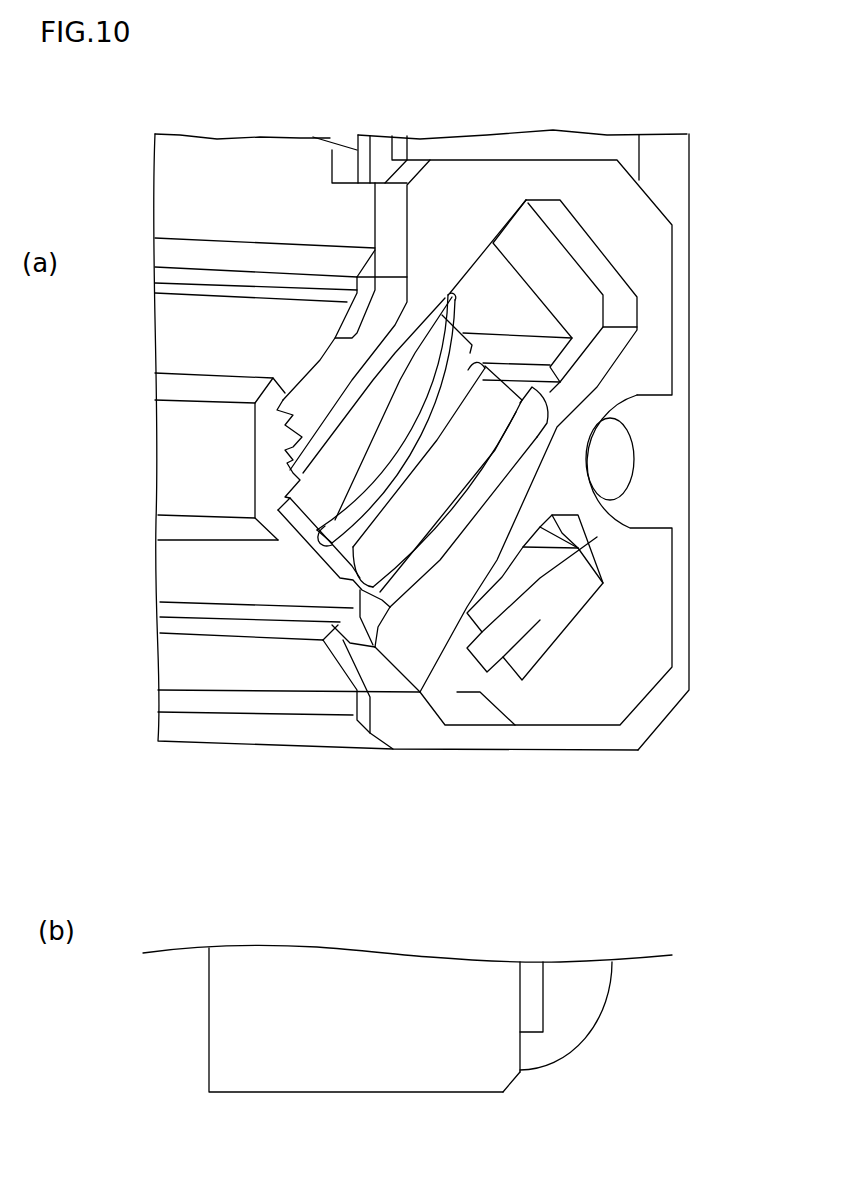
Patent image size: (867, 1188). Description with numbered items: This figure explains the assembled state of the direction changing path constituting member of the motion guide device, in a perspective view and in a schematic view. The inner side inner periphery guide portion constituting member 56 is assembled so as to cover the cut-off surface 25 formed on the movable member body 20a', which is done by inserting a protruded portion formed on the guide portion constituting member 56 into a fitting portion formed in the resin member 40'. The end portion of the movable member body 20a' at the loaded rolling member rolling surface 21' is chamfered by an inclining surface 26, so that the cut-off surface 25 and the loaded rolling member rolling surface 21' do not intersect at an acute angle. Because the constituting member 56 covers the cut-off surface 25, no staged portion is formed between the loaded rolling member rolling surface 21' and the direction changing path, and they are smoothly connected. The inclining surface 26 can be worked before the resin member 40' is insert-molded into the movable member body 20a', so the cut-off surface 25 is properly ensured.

The resin member 40' is at (579, 551).
The inner side inner periphery guide portion constituting member 56 is at (652, 343).
The loaded rolling member rolling surface 21' is at (396, 652).
The inclining surface 26 is at (312, 550).
The movable member body 20a' is at (402, 1018).
The cut-off surface 25 is at (522, 1048).